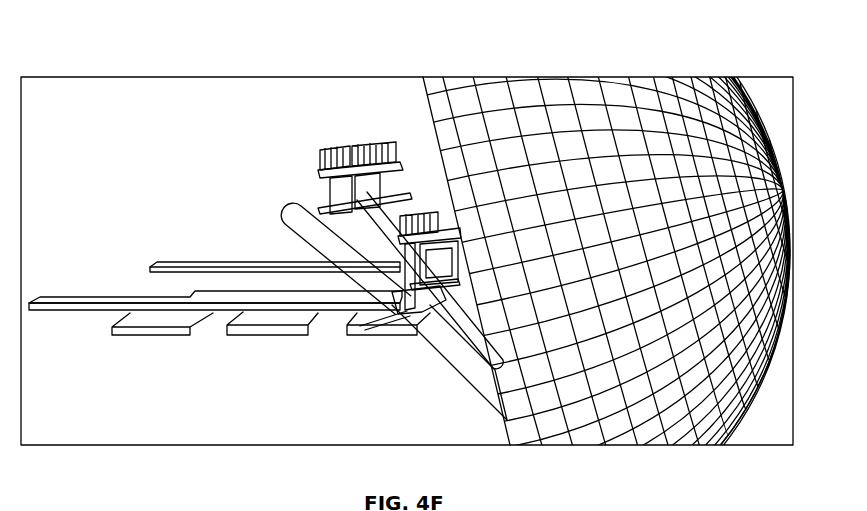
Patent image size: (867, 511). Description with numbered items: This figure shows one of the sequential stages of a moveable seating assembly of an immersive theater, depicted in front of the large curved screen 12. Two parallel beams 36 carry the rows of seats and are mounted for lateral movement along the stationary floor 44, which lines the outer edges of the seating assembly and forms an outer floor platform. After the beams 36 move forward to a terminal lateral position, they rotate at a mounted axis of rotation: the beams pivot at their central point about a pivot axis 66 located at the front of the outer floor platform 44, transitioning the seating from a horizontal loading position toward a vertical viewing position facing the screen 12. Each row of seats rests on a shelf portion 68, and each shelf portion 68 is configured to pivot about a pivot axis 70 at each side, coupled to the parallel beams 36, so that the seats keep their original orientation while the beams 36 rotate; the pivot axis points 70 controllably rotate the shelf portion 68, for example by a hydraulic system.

The screen 12 is at (653, 136).
The parallel beams 36 is at (443, 349).
The stationary floor 44 is at (83, 299).
The pivot axis 66 is at (395, 300).
The shelf portion 68 is at (317, 203).
The pivot axis 70 is at (315, 221).